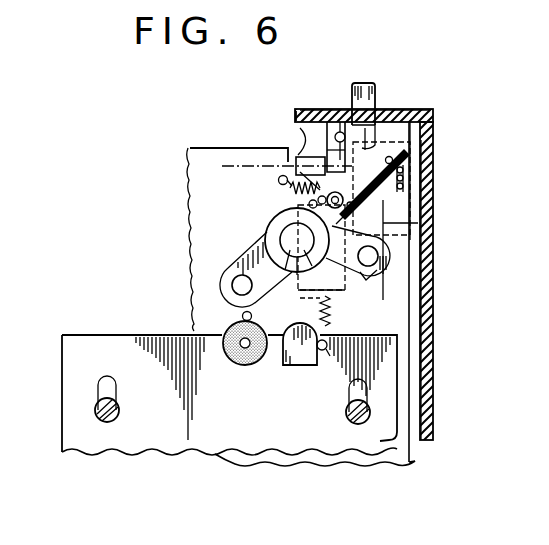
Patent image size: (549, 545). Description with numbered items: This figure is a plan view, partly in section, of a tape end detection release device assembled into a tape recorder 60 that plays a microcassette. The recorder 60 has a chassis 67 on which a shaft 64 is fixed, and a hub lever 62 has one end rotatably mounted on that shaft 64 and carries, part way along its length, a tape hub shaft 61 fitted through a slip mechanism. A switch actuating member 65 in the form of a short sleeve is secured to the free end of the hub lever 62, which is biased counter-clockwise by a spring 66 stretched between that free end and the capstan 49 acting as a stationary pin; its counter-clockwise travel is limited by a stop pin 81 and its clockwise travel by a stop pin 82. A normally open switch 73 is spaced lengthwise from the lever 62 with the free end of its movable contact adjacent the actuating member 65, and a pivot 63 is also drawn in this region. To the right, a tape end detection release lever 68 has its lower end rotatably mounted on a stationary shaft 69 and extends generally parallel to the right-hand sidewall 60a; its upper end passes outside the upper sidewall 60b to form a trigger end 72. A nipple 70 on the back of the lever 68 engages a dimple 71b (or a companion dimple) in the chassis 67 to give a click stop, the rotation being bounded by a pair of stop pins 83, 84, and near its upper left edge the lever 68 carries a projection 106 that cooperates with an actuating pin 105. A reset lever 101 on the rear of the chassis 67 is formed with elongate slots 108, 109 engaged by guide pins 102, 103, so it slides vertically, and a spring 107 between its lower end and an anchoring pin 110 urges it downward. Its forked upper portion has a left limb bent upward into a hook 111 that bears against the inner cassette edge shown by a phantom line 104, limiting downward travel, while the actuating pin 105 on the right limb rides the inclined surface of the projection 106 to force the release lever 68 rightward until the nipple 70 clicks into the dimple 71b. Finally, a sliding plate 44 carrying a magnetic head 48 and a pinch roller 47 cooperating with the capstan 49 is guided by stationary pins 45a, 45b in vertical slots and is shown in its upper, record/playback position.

The sliding plate 44 is at (392, 414).
The stationary pin 45a is at (347, 413).
The stationary pin 45b is at (118, 411).
The pinch roller 47 is at (240, 365).
The magnetic head 48 is at (294, 365).
The capstan 49 is at (242, 316).
The tape recorder 60 is at (452, 112).
The right-hand sidewall 60a is at (425, 180).
The upper sidewall 60b is at (302, 110).
The tape hub shaft 61 is at (265, 240).
The hub lever 62 is at (240, 268).
The pivot pin 63 is at (304, 268).
The shaft 64 is at (232, 284).
The switch actuating member 65 is at (373, 187).
The spring 66 is at (278, 180).
The chassis 67 is at (400, 303).
The tape end detection release lever 68 is at (420, 226).
The stationary shaft 69 is at (375, 268).
The nipple 70 is at (380, 104).
The dimple 71b is at (372, 136).
The trigger end 72 is at (364, 82).
The normally open switch 73 is at (413, 150).
The stop pin 81 is at (300, 196).
The stop pin 82 is at (369, 249).
The stop pin 83 is at (306, 157).
The stop pin 84 is at (405, 194).
The reset lever 101 is at (327, 140).
The guide pin 102 is at (310, 206).
The guide pin 103 is at (305, 332).
The phantom line 104 is at (234, 150).
The actuating pin 105 is at (338, 130).
The projection 106 is at (334, 108).
The spring 107 is at (330, 310).
The elongate slot 108 is at (260, 166).
The elongate slot 109 is at (300, 292).
The anchoring pin 110 is at (328, 355).
The hook 111 is at (298, 140).